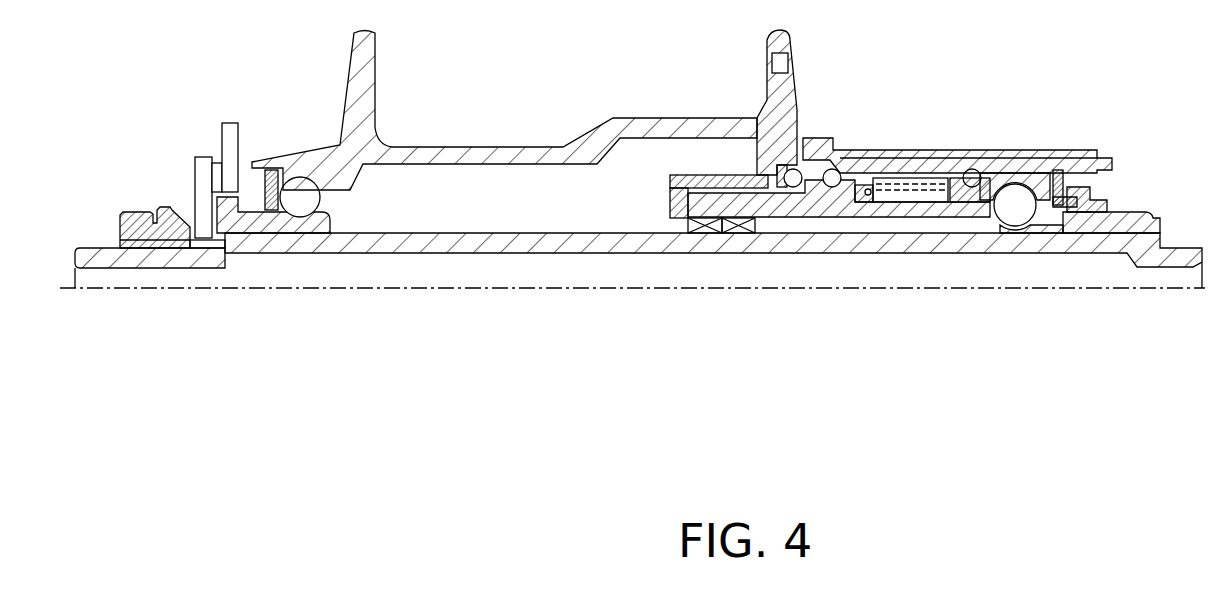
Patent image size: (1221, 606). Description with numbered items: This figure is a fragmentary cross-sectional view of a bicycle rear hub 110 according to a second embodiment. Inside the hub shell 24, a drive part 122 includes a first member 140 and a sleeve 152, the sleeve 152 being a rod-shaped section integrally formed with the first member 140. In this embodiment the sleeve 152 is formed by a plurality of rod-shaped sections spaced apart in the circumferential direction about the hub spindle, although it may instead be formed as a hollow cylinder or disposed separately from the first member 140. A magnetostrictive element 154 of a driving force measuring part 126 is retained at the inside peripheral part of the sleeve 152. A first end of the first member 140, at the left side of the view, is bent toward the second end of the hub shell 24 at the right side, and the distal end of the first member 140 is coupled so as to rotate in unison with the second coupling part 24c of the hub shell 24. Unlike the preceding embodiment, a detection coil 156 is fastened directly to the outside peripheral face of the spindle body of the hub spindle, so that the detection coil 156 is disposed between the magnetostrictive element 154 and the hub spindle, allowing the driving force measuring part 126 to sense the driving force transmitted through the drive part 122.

The hub shell 24 is at (433, 135).
The rear hub 110 is at (530, 103).
The second coupling part 24c is at (743, 177).
The sleeve 152 is at (715, 185).
The drive part 122 is at (927, 142).
The driving force measuring part 126 is at (680, 220).
The detection coil 156 is at (723, 237).
The magnetostrictive element 154 is at (743, 220).
The first member 140 is at (882, 223).